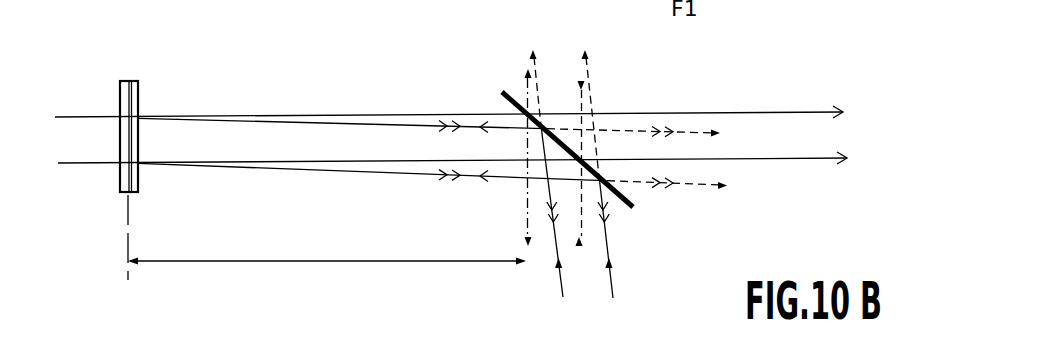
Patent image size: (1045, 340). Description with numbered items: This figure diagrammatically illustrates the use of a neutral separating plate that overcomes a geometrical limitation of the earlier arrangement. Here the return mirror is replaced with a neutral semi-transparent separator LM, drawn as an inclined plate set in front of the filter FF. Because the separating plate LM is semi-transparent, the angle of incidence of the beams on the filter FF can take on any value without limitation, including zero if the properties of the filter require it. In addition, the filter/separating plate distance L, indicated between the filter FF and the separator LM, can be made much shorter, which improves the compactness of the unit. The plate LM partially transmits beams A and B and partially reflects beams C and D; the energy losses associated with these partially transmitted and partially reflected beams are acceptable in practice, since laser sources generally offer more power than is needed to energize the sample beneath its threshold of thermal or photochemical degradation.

The filter FF is at (120, 85).
The neutral semi-transparent separator LM is at (634, 209).
The partially transmitted beam A is at (583, 49).
The partially reflected beam D is at (525, 74).
The partially reflected beam C is at (524, 242).
The partially transmitted beam B is at (727, 182).
The filter/separating plate distance L is at (327, 237).